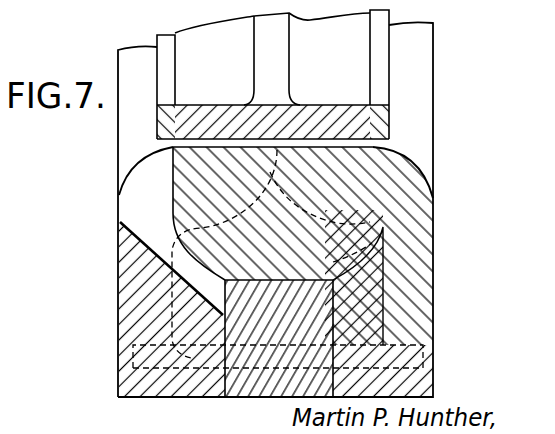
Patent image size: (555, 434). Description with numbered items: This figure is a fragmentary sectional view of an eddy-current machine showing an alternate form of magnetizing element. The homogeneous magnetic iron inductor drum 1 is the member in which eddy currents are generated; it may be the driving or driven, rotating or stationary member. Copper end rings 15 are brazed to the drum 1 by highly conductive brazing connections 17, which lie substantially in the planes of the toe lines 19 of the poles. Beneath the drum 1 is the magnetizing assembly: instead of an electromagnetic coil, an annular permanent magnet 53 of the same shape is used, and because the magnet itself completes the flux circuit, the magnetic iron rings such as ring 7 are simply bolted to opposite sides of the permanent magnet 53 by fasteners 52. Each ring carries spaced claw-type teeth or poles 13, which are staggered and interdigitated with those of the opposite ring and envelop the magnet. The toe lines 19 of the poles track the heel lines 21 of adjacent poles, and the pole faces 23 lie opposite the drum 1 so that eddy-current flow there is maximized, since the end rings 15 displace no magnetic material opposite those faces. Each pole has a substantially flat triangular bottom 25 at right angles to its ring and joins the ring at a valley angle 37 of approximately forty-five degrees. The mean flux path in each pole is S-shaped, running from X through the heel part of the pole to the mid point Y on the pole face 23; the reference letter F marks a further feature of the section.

The inductor drum 1 is at (238, 108).
The magnetic iron ring 7 is at (133, 314).
The claw-type teeth or poles 13 is at (150, 213).
The copper end rings 15 is at (164, 103).
The brazing connections 17 is at (179, 108).
The toe lines 19 is at (172, 148).
The heel lines 21 is at (377, 146).
The pole faces 23 is at (296, 146).
The triangular bottom 25 is at (292, 282).
The valley angle 37 is at (160, 254).
The fasteners 52 is at (434, 324).
The permanent magnet 53 is at (255, 386).
The flux path start point X is at (275, 276).
The mid point on pole face Y is at (272, 168).
The reference line F is at (383, 293).